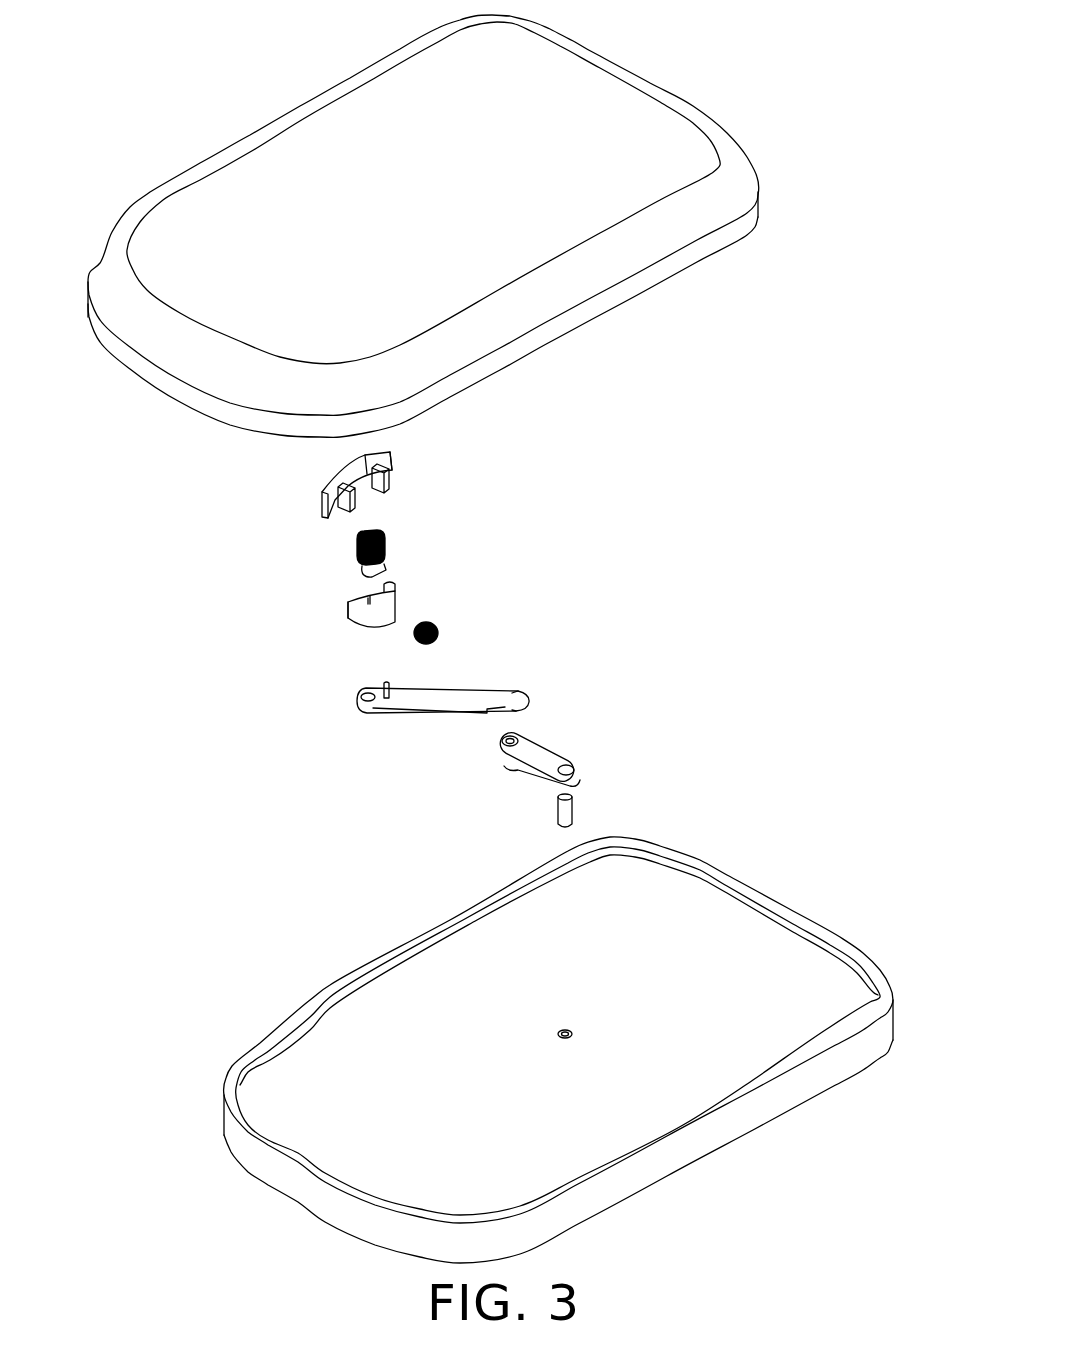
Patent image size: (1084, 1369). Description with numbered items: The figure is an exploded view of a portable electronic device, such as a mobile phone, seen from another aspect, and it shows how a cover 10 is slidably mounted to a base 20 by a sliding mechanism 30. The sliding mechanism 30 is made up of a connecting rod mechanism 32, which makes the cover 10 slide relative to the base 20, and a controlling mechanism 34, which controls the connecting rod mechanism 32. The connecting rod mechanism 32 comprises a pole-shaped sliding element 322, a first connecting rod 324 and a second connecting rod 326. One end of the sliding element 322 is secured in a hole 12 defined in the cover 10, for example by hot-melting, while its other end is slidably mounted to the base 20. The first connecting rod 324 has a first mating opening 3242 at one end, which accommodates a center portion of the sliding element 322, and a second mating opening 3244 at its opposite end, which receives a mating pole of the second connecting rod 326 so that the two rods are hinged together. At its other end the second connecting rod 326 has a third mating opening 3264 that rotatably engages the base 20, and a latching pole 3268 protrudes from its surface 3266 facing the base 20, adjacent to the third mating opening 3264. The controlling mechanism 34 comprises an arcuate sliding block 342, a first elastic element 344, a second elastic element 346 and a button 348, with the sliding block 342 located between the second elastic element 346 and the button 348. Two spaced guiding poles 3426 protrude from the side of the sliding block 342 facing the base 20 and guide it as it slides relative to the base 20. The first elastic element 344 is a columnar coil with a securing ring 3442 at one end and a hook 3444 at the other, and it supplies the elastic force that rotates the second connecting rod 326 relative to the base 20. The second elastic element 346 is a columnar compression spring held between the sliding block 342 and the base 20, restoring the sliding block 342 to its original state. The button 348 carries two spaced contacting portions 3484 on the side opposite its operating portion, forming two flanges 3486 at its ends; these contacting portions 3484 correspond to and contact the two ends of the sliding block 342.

The cover 10 is at (708, 922).
The hole 12 is at (558, 1030).
The base 20 is at (740, 190).
The sliding mechanism 30 is at (147, 542).
The connecting rod mechanism 32 is at (203, 678).
The controlling mechanism 34 is at (197, 450).
The sliding element 322 is at (557, 808).
The first connecting rod 324 is at (508, 758).
The second connecting rod 326 is at (355, 697).
The sliding block 342 is at (346, 609).
The first elastic element 344 is at (341, 549).
The second elastic element 346 is at (417, 638).
The button 348 is at (311, 490).
The first mating opening 3242 is at (580, 766).
The second mating opening 3244 is at (518, 738).
The third mating opening 3264 is at (372, 692).
The surface 3266 is at (516, 698).
The latching pole 3268 is at (388, 683).
The guiding poles 3426 is at (396, 590).
The securing ring 3442 is at (380, 530).
The hook 3444 is at (392, 571).
The contacting portions 3484 is at (392, 480).
The flanges 3486 is at (390, 454).